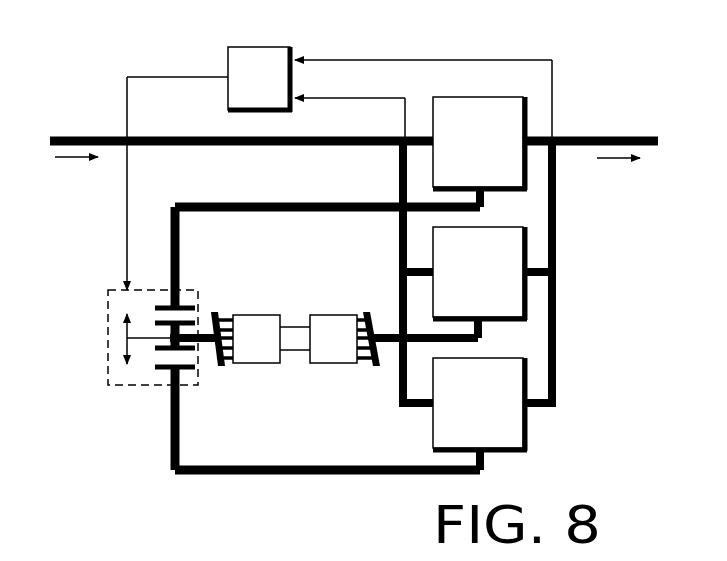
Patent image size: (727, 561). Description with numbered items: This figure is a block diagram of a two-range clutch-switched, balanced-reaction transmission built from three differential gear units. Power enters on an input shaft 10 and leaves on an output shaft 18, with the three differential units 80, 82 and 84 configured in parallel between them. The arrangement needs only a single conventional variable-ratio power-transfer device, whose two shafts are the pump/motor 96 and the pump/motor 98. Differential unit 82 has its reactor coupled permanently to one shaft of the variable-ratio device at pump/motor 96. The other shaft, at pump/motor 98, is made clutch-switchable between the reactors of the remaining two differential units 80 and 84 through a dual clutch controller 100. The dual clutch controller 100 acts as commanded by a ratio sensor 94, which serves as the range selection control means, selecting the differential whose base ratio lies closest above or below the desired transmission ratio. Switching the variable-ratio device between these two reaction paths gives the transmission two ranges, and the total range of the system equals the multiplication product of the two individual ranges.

The input shaft 10 is at (107, 137).
The output shaft 18 is at (612, 137).
The differential unit 80 is at (527, 118).
The differential unit 82 is at (527, 250).
The differential unit 84 is at (553, 382).
The ratio sensor 94 is at (228, 63).
The pump/motor 96 is at (268, 314).
The pump/motor 98 is at (347, 314).
The dual clutch controller 100 is at (108, 348).